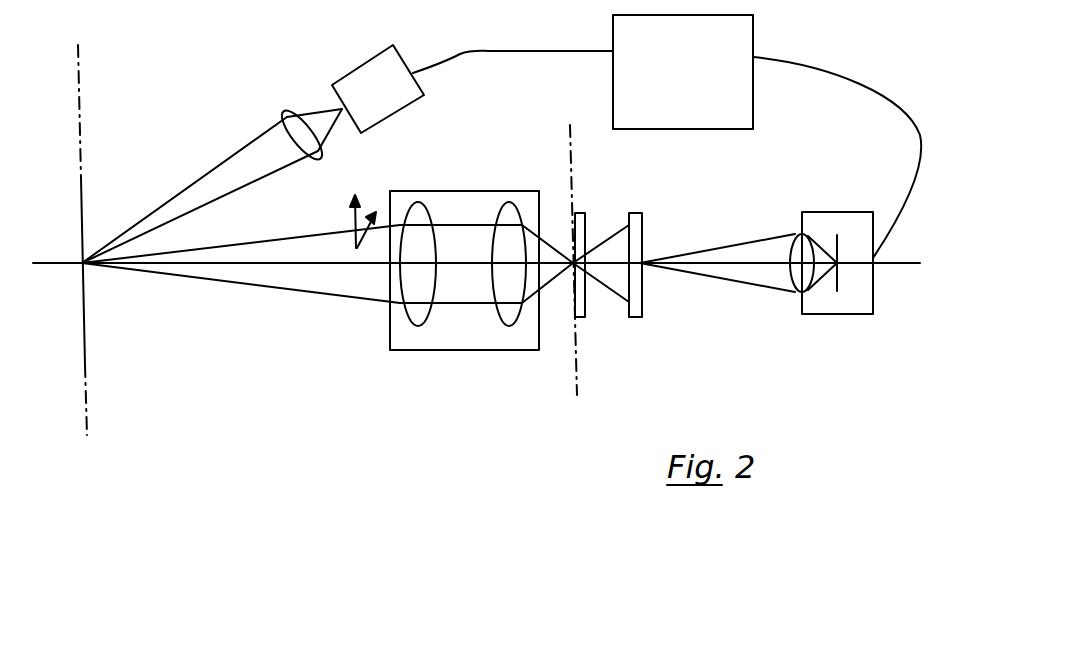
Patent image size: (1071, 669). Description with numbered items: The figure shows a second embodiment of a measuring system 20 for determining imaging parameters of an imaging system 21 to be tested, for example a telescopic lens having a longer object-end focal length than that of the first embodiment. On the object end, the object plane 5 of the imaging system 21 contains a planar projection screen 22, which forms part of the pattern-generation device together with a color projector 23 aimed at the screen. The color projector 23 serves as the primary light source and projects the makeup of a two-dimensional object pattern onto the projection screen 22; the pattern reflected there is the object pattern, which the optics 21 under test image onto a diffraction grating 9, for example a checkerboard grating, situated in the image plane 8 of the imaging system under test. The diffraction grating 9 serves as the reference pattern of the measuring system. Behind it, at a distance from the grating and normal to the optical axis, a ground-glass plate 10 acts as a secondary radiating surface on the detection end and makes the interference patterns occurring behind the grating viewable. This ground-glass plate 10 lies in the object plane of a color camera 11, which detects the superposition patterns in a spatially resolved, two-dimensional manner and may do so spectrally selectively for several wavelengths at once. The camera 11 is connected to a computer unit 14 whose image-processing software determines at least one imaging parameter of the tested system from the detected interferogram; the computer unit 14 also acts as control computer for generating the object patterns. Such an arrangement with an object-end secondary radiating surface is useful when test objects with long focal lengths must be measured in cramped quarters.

The object plane 5 is at (83, 437).
The image plane 8 is at (577, 398).
The diffraction grating 9 is at (586, 317).
The ground-glass plate 10 is at (645, 318).
The color camera 11 is at (843, 315).
The computer unit 14 is at (740, 38).
The measuring system 20 is at (253, 469).
The imaging system to be tested 21 is at (463, 350).
The projection screen 22 is at (86, 333).
The color projector 23 is at (343, 58).